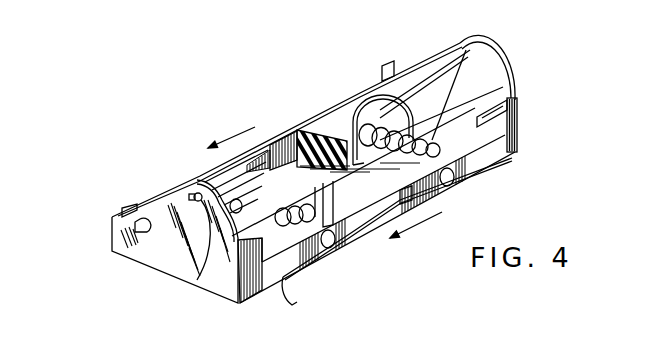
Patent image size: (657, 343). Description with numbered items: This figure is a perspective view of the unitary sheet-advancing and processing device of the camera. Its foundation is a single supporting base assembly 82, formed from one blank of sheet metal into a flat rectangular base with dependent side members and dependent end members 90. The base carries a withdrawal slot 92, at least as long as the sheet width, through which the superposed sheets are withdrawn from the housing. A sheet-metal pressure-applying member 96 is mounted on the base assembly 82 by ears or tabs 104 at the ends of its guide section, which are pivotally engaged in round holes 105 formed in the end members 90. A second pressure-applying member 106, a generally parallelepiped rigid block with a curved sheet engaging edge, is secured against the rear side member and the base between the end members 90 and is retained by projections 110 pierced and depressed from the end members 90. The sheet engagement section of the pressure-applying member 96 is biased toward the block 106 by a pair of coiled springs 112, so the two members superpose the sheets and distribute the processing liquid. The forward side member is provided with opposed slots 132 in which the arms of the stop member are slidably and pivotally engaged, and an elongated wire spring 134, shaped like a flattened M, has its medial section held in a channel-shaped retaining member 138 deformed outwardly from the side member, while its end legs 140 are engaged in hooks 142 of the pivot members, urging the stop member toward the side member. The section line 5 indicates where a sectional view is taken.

The section line 5- 5 is at (332, 176).
The supporting base assembly 82 is at (526, 106).
The end member 90 is at (163, 271).
The withdrawal slot 92 is at (284, 140).
The pressure-applying member 96 is at (240, 150).
The ears or tabs 104 is at (192, 195).
The round holes 105 is at (199, 253).
The second pressure-applying member 106 is at (329, 122).
The projections 110 is at (134, 225).
The coiled springs 112 is at (428, 147).
The opposed slots 132 is at (240, 303).
The wire spring 134 is at (472, 183).
The channel-shaped retaining member 138 is at (404, 195).
The end legs 140 is at (320, 253).
The hooks 142 is at (291, 300).